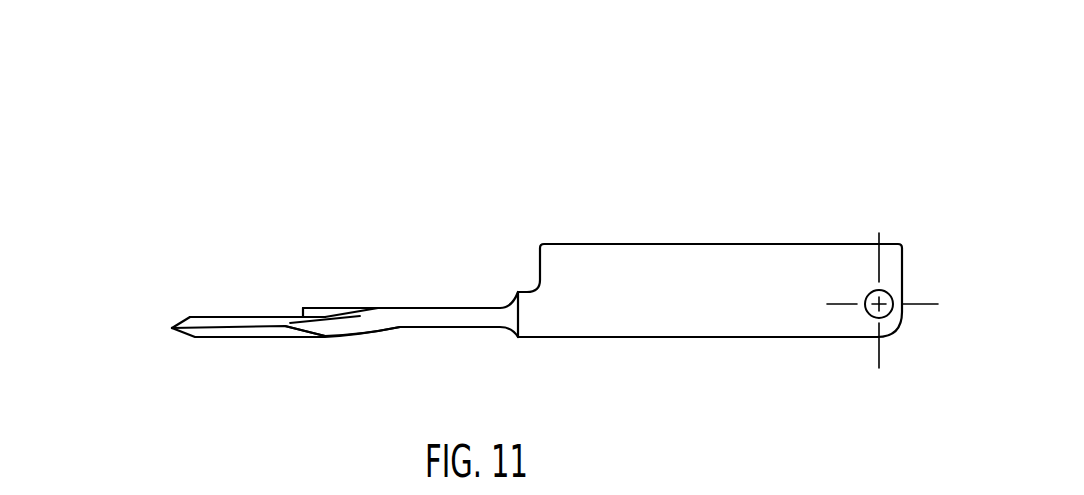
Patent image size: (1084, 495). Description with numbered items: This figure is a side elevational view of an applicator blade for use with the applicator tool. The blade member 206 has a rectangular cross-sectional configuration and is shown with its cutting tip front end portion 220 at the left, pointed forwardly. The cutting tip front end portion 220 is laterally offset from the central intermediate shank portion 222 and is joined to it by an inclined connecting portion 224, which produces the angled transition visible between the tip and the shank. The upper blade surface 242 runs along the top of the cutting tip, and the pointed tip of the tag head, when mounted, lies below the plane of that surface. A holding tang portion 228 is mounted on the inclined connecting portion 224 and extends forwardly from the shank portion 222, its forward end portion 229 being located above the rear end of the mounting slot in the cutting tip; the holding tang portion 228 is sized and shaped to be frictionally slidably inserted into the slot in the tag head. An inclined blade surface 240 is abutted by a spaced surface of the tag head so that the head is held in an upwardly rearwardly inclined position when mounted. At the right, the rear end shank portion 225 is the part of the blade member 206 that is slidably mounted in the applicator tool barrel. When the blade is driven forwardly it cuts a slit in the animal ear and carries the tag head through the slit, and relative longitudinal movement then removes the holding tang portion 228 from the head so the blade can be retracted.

The blade member 206 is at (586, 166).
The cutting tip front end portion 220 is at (188, 317).
The upper blade surface 242 is at (208, 317).
The forward end portion 229 is at (303, 307).
The holding tang portion 228 is at (335, 308).
The inclined blade surface 240 is at (363, 310).
The inclined connecting portion 224 is at (368, 323).
The central intermediate shank portion 222 is at (463, 305).
The rear end shank portion 225 is at (767, 244).